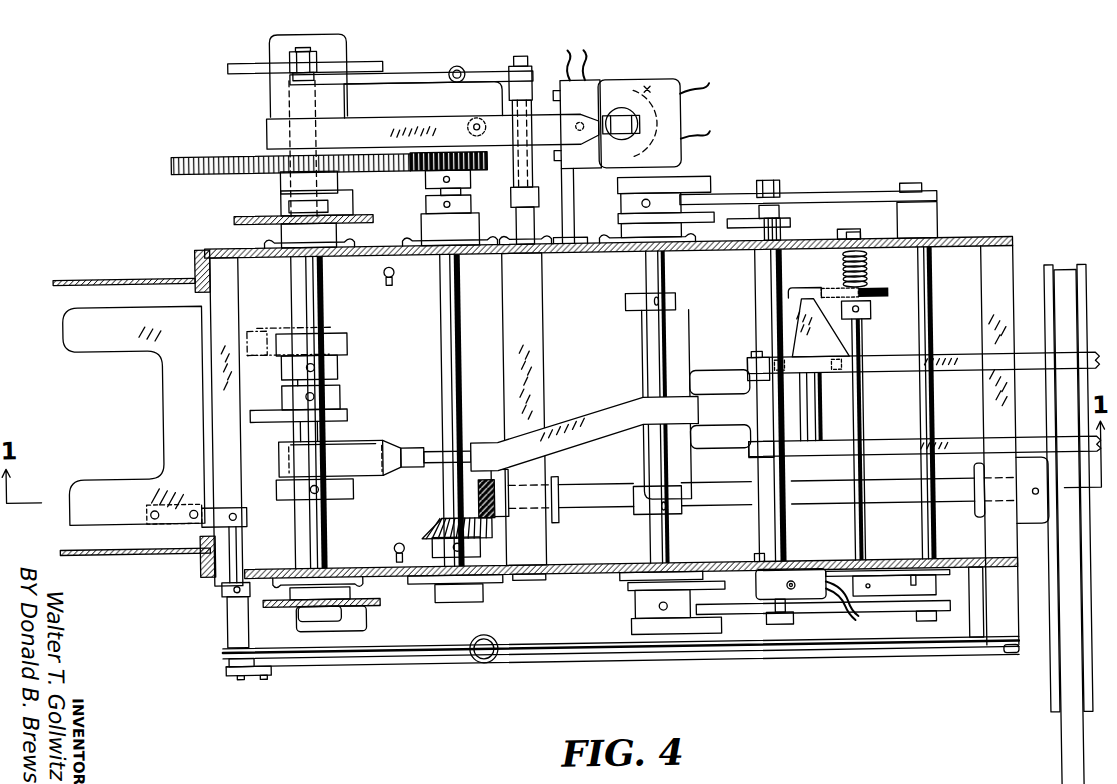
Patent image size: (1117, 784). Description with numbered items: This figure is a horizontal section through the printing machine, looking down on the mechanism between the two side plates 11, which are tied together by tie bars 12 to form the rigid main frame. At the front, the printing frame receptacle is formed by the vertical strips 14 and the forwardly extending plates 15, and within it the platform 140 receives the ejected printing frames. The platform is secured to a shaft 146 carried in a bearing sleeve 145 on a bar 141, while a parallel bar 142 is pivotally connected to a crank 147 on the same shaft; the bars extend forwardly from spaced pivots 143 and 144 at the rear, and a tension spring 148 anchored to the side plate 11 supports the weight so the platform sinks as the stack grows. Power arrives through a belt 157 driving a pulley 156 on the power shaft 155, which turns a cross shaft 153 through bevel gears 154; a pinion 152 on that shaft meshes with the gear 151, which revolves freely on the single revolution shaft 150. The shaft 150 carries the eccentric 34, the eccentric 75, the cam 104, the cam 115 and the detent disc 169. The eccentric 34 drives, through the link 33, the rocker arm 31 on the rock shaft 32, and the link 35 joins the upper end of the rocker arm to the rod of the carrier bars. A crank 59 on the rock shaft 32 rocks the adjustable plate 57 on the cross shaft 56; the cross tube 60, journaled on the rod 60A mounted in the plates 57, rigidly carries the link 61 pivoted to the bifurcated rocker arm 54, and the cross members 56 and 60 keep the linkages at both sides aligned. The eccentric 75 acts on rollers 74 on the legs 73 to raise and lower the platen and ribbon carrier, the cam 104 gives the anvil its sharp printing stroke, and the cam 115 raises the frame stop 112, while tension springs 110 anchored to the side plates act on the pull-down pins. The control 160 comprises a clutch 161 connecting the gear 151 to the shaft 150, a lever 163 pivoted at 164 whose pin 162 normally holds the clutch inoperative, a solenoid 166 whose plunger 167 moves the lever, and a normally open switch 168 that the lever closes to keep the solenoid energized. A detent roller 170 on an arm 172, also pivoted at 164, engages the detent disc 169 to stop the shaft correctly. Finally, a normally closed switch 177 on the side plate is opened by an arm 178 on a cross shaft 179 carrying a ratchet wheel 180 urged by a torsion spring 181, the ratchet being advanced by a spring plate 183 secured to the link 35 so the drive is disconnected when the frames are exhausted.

The side plates 11 is at (963, 247).
The tie bars 12 is at (1017, 262).
The vertical strips 14 is at (196, 268).
The forwardly extending plates 15 is at (100, 272).
The rocker arm 31 is at (720, 374).
The rock shaft 32 is at (638, 279).
The link 33 is at (609, 415).
The eccentric 34 is at (367, 437).
The link 35 is at (960, 361).
The rocker arms 54 is at (634, 213).
The cross shaft 56 is at (922, 277).
The adjustable plate 57 is at (866, 178).
The crank 59 is at (700, 180).
The cross tube 60 is at (757, 270).
The rod 60A is at (773, 183).
The link 61 is at (795, 225).
The legs 73 is at (240, 213).
The rollers 74 is at (292, 201).
The eccentric 75 is at (289, 186).
The cam 104 is at (347, 413).
The tension springs 110 is at (386, 270).
The frame stop 112 is at (258, 325).
The cam 115 is at (348, 344).
The platform 140 is at (163, 410).
The bar 141 is at (571, 623).
The bar 142 is at (573, 660).
The pivot 143 is at (978, 632).
The pivot 144 is at (1006, 661).
The bearing sleeve 145 is at (225, 614).
The shaft 146 is at (236, 551).
The crank 147 is at (256, 665).
The tension spring 148 is at (470, 660).
The single revolution shaft 150 is at (327, 299).
The gear 151 is at (184, 148).
The pinion 152 is at (452, 160).
The cross shaft 153 is at (465, 352).
The bevel gears 154 is at (440, 515).
The power shaft 155 is at (745, 508).
The pulley 156 is at (1046, 691).
The belt 157 is at (1056, 746).
The combined mechanical and electrical control 160 is at (703, 112).
The clutch 161 is at (276, 90).
The pin 162 is at (295, 128).
The lever 163 is at (436, 100).
The pivot 164 is at (530, 54).
The solenoid 166 is at (668, 92).
The plunger 167 is at (631, 108).
The normally open switch 168 is at (598, 100).
The detent disc 169 is at (357, 60).
The detent roller 170 is at (298, 57).
The arm 172 is at (422, 70).
The normally closed switch 177 is at (798, 594).
The arm 178 is at (889, 603).
The cross shaft 179 is at (856, 535).
The ratchet wheel 180 is at (878, 303).
The torsion spring 181 is at (846, 265).
The spring plate 183 is at (795, 302).